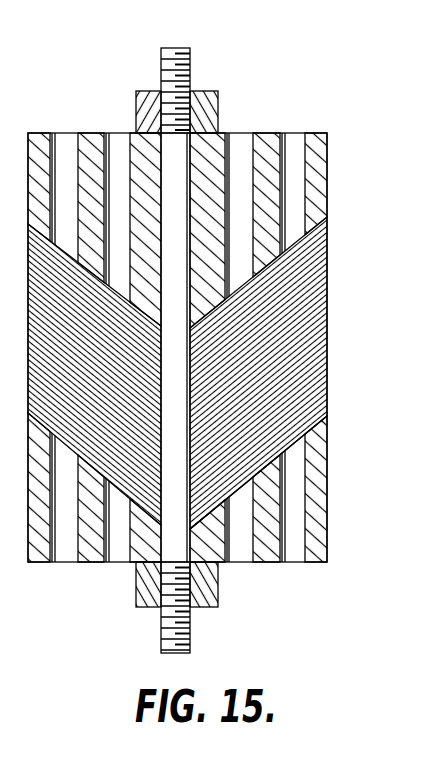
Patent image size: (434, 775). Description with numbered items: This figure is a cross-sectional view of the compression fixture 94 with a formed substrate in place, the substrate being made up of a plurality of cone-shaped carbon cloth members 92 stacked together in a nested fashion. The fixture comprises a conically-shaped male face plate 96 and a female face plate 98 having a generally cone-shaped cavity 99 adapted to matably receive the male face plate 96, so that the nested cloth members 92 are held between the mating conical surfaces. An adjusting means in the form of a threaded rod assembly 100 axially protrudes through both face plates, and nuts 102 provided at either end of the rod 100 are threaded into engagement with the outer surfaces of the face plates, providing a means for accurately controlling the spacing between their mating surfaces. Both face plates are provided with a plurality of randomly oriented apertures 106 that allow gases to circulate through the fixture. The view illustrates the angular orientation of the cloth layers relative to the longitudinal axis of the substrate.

The compression fixture 94 is at (316, 108).
The male face plate 96 is at (330, 186).
The female face plate 98 is at (332, 492).
The cone-shaped carbon cloth members 92 is at (331, 321).
The cone-shaped cavity 99 is at (327, 398).
The threaded rod assembly 100 is at (197, 56).
The nuts 102 is at (217, 95).
The apertures 106 is at (112, 145).